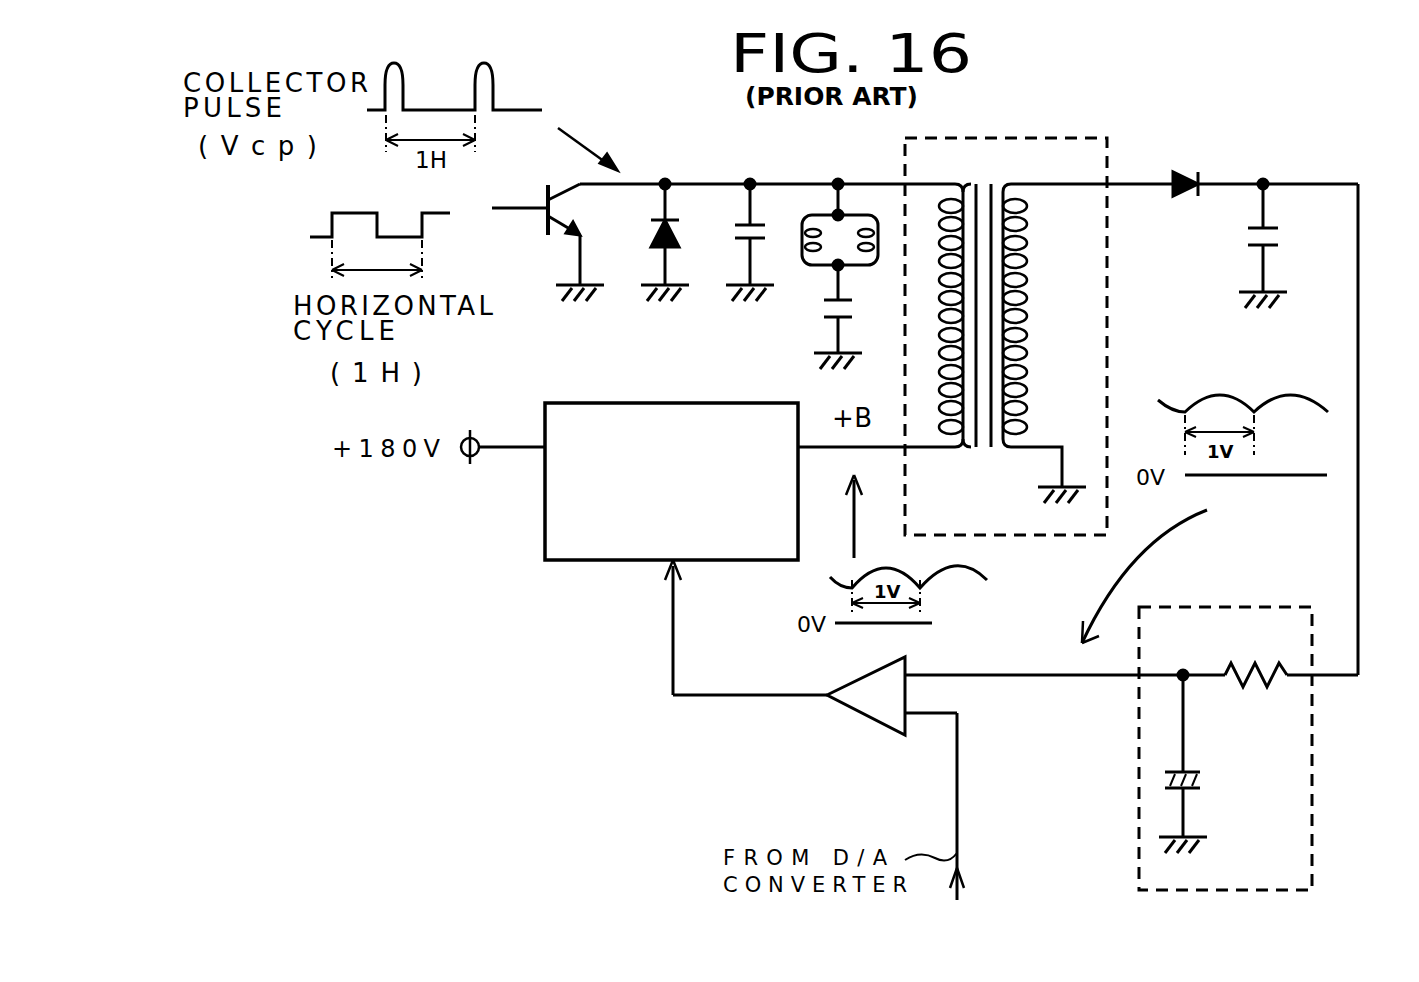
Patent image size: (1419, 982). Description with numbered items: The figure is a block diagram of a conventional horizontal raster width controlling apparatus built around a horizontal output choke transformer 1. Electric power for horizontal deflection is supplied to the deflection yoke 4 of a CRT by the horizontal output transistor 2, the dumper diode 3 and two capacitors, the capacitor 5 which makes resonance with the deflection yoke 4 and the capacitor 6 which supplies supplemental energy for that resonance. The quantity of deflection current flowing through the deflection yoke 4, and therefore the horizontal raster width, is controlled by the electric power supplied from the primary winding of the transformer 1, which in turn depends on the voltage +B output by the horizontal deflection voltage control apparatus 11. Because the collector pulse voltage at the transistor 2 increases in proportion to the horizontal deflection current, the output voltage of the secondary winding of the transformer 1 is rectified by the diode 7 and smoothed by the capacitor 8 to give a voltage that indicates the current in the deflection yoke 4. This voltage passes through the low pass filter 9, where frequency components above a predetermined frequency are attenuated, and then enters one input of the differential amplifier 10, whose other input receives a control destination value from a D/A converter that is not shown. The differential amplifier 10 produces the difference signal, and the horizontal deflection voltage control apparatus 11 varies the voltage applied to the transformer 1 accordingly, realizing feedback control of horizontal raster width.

The horizontal output choke transformer 1 is at (1030, 138).
The horizontal output transistor 2 is at (540, 206).
The dumper diode 3 is at (648, 227).
The deflection yoke 4 is at (820, 215).
The capacitor 5 is at (736, 227).
The capacitor 6 is at (822, 309).
The diode 7 is at (1188, 176).
The capacitor 8 is at (1278, 235).
The low pass filter 9 is at (1245, 606).
The differential amplifier 10 is at (866, 712).
The horizontal deflection voltage control apparatus 11 is at (695, 403).